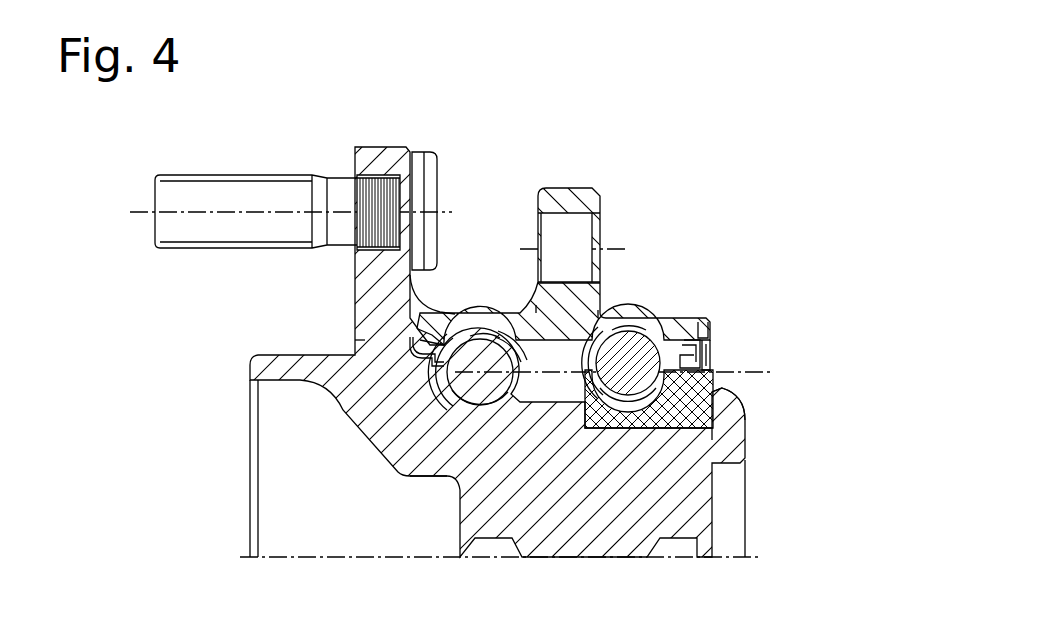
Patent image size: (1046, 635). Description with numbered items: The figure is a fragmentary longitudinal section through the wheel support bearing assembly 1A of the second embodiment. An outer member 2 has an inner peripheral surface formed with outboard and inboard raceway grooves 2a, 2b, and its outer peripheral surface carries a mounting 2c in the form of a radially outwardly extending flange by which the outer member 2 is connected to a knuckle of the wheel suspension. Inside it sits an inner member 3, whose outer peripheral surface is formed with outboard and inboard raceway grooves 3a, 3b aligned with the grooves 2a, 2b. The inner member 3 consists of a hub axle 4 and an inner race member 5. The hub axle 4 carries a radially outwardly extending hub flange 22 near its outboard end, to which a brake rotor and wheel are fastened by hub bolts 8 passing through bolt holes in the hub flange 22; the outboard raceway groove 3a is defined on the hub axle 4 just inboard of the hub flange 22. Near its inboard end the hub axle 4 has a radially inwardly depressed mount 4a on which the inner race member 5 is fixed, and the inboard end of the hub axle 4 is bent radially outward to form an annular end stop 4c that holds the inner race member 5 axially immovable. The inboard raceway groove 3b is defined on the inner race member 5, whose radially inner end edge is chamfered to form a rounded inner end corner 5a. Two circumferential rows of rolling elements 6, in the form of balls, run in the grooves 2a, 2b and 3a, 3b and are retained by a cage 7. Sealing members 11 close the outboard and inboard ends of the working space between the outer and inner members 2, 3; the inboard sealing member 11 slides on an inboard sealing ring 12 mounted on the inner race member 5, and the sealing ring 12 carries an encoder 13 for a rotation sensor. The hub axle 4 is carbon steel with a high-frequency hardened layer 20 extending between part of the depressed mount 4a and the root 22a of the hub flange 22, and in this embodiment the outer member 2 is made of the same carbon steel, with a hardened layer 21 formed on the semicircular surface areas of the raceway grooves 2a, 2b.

The wheel support bearing assembly 1A is at (435, 127).
The outer member 2 is at (662, 317).
The outboard raceway groove 2a is at (486, 335).
The inboard raceway groove 2b is at (672, 317).
The mounting 2c is at (580, 188).
The inner member 3 is at (168, 463).
The outboard raceway groove 3a is at (435, 392).
The inboard raceway groove 3b is at (712, 435).
The hub axle 4 is at (385, 400).
The depressed mount 4a is at (605, 425).
The annular end stop 4c is at (732, 422).
The inner race member 5 is at (583, 432).
The rounded inner end corner 5a is at (660, 440).
The rolling elements 6 is at (478, 338).
The retainer or cage 7 is at (506, 336).
The hub bolts 8 is at (218, 190).
The sealing members 11 is at (430, 335).
The inboard sealing ring 12 is at (707, 348).
The encoder 13 is at (710, 364).
The hardened layer 20 is at (410, 477).
The hardened layer 21 is at (505, 330).
The hub flange 22 is at (383, 150).
The root of the hub flange 22a is at (383, 332).